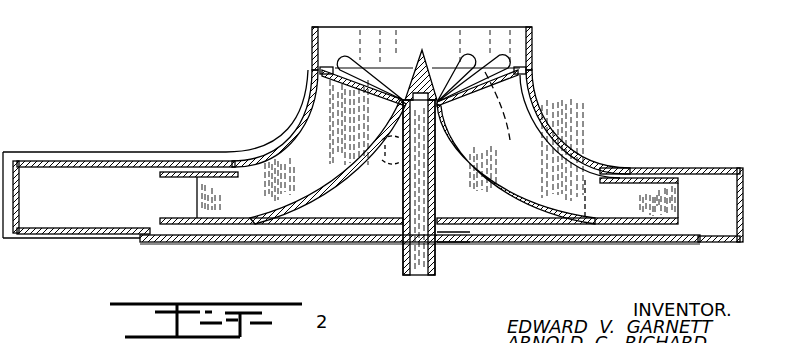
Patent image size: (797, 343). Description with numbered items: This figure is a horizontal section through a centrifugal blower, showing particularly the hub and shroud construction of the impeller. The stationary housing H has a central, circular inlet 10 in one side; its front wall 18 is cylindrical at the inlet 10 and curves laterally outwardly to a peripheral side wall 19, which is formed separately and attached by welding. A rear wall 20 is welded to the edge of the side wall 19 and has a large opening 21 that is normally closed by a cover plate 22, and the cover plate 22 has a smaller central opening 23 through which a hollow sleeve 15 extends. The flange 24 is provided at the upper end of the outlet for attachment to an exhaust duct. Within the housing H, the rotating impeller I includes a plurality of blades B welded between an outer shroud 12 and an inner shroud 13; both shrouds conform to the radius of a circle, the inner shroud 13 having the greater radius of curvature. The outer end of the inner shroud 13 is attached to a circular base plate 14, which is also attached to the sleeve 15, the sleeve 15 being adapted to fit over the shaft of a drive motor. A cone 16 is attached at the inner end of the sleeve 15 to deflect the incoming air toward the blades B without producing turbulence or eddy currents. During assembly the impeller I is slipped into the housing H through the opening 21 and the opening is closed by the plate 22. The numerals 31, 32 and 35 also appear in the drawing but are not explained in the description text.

The inlet 10 is at (533, 29).
The outer shroud 12 is at (533, 130).
The inner shroud 13 is at (482, 168).
The base plate 14 is at (458, 222).
The sleeve 15 is at (404, 258).
The cone 16 is at (421, 50).
The front wall 18 is at (656, 168).
The side wall 19 is at (20, 196).
The rear wall 20 is at (60, 228).
The opening 21 is at (620, 232).
The cover plate 22 is at (543, 243).
The central opening 23 is at (440, 243).
The flange 24 is at (38, 158).
The shroud edge 31 is at (326, 68).
The blade 32 is at (345, 57).
The rotor disc 35 is at (500, 77).
The housing H is at (289, 118).
The impeller I is at (342, 188).
The blades B is at (321, 168).